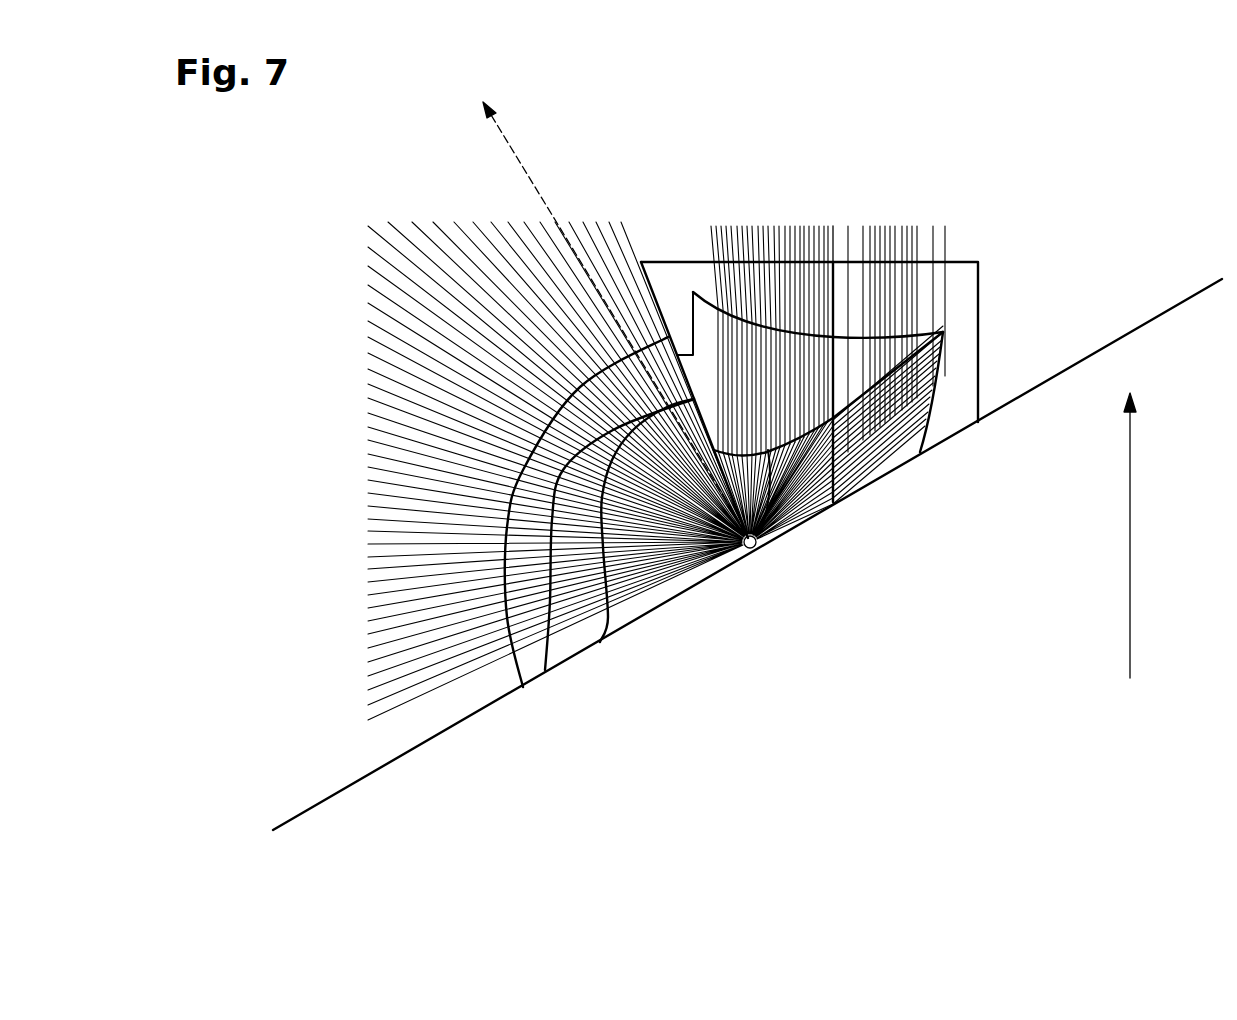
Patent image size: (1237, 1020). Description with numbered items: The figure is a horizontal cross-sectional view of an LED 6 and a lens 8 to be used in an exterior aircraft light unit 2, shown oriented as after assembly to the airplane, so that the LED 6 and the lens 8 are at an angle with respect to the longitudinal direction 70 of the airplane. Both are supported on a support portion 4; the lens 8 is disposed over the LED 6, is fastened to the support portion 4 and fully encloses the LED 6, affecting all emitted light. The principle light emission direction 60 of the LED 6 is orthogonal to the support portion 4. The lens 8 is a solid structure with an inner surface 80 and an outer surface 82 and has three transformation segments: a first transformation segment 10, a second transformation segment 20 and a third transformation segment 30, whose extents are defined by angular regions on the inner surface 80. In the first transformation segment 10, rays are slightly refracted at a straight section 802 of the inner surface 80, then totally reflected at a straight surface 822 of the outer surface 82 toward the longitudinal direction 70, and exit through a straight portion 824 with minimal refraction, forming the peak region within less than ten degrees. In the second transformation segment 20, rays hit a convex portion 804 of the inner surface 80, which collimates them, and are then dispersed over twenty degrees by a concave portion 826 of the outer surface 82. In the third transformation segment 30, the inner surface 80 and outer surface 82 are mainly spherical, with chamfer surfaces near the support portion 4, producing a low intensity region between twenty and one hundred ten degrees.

The exterior aircraft light unit 2 is at (338, 210).
The support portion 4 is at (1028, 392).
The LED 6 is at (750, 560).
The lens 8 is at (575, 473).
The first transformation segment 10 is at (978, 302).
The second transformation segment 20 is at (663, 262).
The third transformation segment 30 is at (512, 676).
The principle light emission direction 60 is at (515, 153).
The longitudinal direction of the airplane 70 is at (1130, 530).
The inner surface 80 is at (628, 582).
The outer surface 82 is at (547, 613).
The straight section of the inner surface 802 is at (818, 460).
The convex portion of the inner surface 804 is at (759, 550).
The surface of total internal reflection 822 is at (925, 400).
The straight portion of the outer surface 824 is at (931, 334).
The concave portion of the outer surface 826 is at (822, 332).